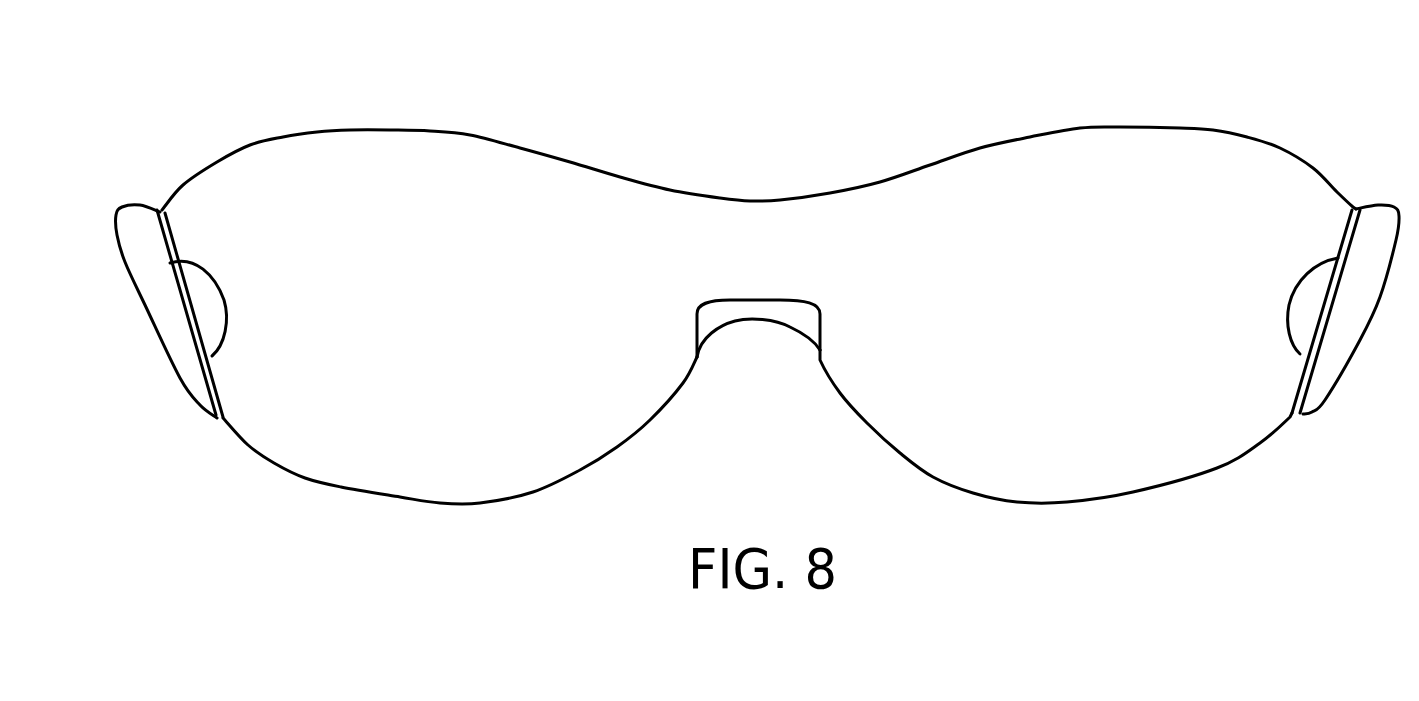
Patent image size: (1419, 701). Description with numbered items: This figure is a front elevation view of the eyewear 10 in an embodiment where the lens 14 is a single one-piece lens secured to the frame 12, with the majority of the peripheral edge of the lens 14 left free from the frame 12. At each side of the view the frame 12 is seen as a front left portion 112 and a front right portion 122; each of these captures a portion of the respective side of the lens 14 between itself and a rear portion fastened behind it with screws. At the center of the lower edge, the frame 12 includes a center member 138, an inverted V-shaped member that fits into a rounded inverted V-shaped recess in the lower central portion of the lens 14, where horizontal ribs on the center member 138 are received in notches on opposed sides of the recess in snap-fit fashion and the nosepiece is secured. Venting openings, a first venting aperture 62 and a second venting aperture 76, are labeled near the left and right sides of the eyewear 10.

The eyewear 10 is at (755, 264).
The frame 12 is at (733, 316).
The lens 14 is at (997, 302).
The first venting aperture 62 is at (1300, 309).
The second venting aperture 76 is at (213, 308).
The front left portion 112 is at (1352, 322).
The front right portion 122 is at (157, 310).
The center member 138 is at (747, 308).